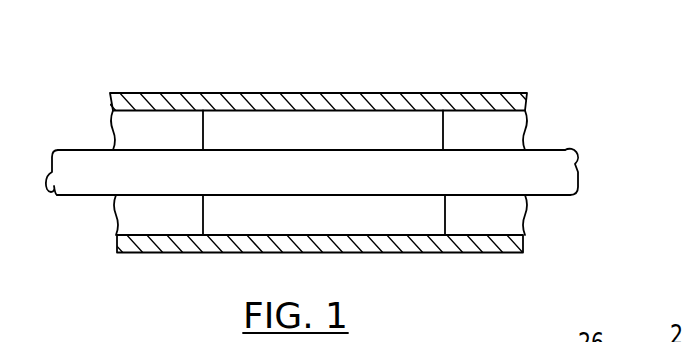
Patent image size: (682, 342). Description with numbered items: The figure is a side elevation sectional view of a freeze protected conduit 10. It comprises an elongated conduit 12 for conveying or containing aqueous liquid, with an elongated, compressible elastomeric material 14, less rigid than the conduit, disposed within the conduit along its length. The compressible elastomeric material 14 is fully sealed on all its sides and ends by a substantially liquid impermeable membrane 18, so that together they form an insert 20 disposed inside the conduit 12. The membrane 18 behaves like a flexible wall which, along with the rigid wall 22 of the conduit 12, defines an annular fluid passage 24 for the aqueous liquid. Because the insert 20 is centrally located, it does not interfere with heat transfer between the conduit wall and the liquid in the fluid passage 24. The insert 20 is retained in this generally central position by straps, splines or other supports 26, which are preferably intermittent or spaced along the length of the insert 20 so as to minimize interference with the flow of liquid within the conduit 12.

The freeze protected conduit 10 is at (309, 154).
The elongated conduit 12 is at (498, 93).
The compressible elastomeric material 14 is at (338, 163).
The liquid impermeable membrane 18 is at (75, 150).
The insert 20 is at (172, 197).
The rigid wall 22 is at (482, 241).
The annular fluid passage 24 is at (272, 142).
The supports 26 is at (203, 130).